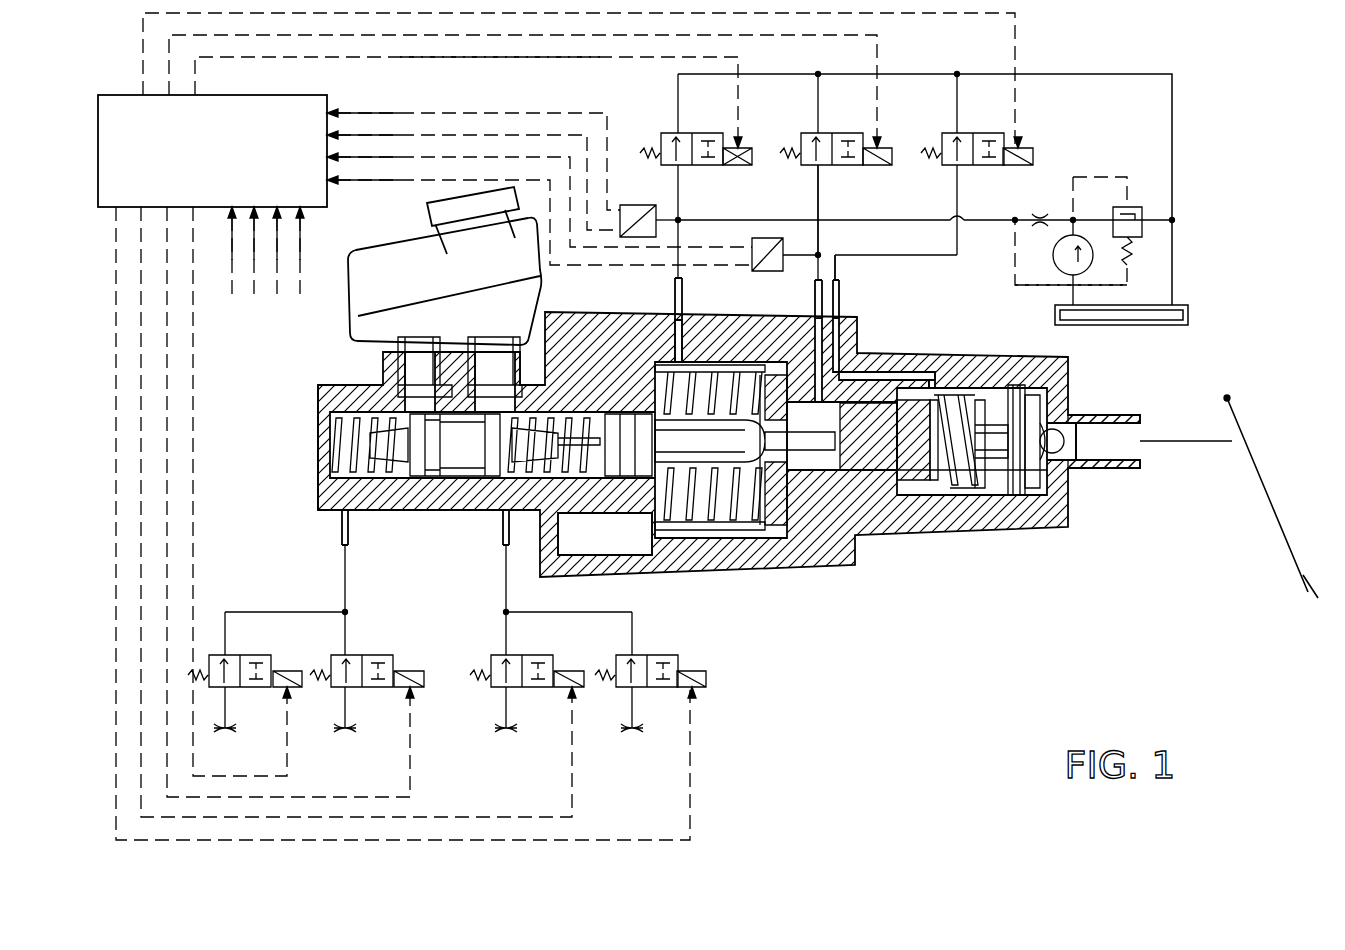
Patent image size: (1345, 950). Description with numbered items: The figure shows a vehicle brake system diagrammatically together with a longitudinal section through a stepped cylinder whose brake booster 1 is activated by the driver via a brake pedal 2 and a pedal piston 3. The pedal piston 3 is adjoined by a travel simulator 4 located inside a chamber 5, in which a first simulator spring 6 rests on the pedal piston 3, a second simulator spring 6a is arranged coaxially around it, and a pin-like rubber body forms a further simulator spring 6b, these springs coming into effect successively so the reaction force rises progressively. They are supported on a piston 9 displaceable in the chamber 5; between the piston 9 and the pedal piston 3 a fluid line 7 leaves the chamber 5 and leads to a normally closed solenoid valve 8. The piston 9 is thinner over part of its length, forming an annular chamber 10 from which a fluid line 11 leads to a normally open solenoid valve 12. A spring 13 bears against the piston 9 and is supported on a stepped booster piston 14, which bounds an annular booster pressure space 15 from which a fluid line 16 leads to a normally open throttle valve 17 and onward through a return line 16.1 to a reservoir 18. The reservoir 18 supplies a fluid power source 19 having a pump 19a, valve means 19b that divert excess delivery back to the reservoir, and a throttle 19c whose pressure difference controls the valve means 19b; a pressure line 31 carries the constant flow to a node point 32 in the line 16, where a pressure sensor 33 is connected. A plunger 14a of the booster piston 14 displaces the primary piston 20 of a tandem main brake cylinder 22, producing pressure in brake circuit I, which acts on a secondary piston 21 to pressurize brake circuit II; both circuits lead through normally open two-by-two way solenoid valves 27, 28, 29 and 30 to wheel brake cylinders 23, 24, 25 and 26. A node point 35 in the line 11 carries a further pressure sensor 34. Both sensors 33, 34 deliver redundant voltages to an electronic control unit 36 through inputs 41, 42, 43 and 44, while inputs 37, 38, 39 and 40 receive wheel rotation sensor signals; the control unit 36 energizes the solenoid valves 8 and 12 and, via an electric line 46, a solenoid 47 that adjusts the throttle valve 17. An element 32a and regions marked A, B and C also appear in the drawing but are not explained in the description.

The brake booster 1 is at (872, 592).
The brake pedal 2 is at (1262, 470).
The pedal piston 3 is at (1030, 472).
The travel simulator 4 is at (958, 502).
The chamber 5 is at (998, 482).
The simulator spring 6 is at (1002, 393).
The second simulator spring 6a is at (985, 497).
The further simulator spring 6b is at (945, 402).
The fluid line 7 is at (845, 262).
The solenoid valve 8 is at (972, 133).
The piston 9 is at (868, 372).
The annular chamber 10 is at (903, 395).
The fluid line 11 is at (814, 292).
The solenoid valve 12 is at (828, 133).
The spring 13 is at (800, 522).
The booster piston 14 is at (733, 465).
The plunger 14a is at (605, 534).
The booster pressure space 15 is at (775, 492).
The fluid line 16 is at (680, 204).
The return line 16.1 is at (903, 74).
The throttle valve 17 is at (690, 133).
The reservoir 18 is at (1190, 316).
The fluid power source 19 is at (1145, 255).
The pump 19a is at (1052, 257).
The valve means 19b is at (1142, 213).
The throttle 19c is at (1036, 216).
The primary piston 20 is at (657, 393).
The secondary piston 21 is at (478, 458).
The tandem main brake cylinder 22 is at (416, 522).
The wheel brake cylinder 23 is at (230, 732).
The wheel brake cylinder 24 is at (350, 732).
The wheel brake cylinder 25 is at (511, 732).
The wheel brake cylinder 26 is at (637, 732).
The 2/2 way solenoid valve 27 is at (250, 655).
The 2/2 way solenoid valve 28 is at (368, 655).
The 2/2 way solenoid valve 29 is at (506, 655).
The 2/2 way solenoid valve 30 is at (628, 655).
The pressure line 31 is at (898, 222).
The node point 32 is at (677, 225).
The passage 32a is at (690, 563).
The pressure sensor 33 is at (652, 205).
The pressure sensor 34 is at (760, 278).
The node point 35 is at (820, 255).
The electronic control unit 36 is at (118, 98).
The input 37 is at (231, 206).
The input 38 is at (254, 206).
The input 39 is at (277, 206).
The input 40 is at (302, 210).
The input 41 is at (331, 182).
The input 42 is at (332, 156).
The input 43 is at (326, 134).
The input 44 is at (334, 112).
The electric line 46 is at (528, 58).
The solenoid 47 is at (745, 150).
The chamber A is at (790, 450).
The chamber B is at (972, 531).
The chamber C is at (1010, 380).
The brake circuit I is at (504, 575).
The brake circuit II is at (343, 575).